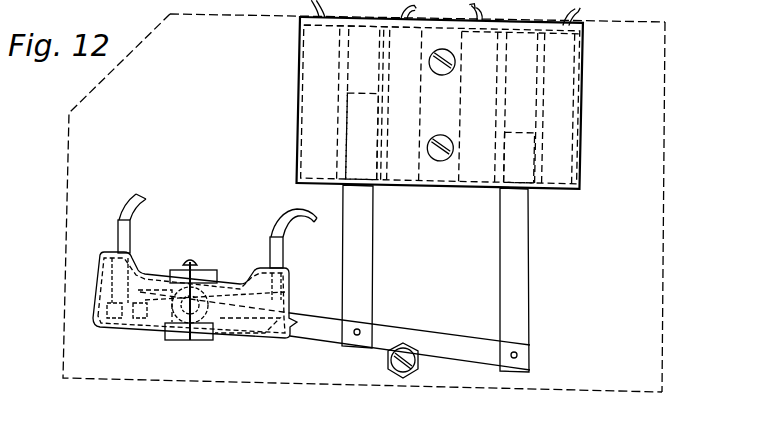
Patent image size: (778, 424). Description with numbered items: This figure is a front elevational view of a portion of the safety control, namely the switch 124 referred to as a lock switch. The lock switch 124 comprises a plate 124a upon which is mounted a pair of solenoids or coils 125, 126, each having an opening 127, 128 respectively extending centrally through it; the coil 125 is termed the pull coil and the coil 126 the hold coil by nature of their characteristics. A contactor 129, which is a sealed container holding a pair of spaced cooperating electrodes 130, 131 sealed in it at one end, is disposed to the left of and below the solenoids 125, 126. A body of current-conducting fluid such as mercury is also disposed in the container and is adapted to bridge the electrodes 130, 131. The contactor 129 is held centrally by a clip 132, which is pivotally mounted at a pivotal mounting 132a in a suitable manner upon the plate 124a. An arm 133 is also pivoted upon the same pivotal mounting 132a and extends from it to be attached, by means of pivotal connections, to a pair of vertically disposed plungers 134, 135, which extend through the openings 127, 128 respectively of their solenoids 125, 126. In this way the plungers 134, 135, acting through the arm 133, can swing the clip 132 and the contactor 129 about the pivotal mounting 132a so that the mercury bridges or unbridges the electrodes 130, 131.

The lock switch 124 is at (659, 73).
The plate 124a is at (664, 268).
The pull coil 125 is at (313, 101).
The hold coil 126 is at (578, 105).
The opening 127 is at (350, 50).
The opening 128 is at (538, 66).
The contactor 129 is at (91, 335).
The electrode 130 is at (97, 310).
The electrode 131 is at (136, 333).
The clip 132 is at (212, 342).
The pivotal mounting 132a is at (191, 261).
The arm 133 is at (322, 335).
The plunger 134 is at (373, 249).
The plunger 135 is at (529, 256).